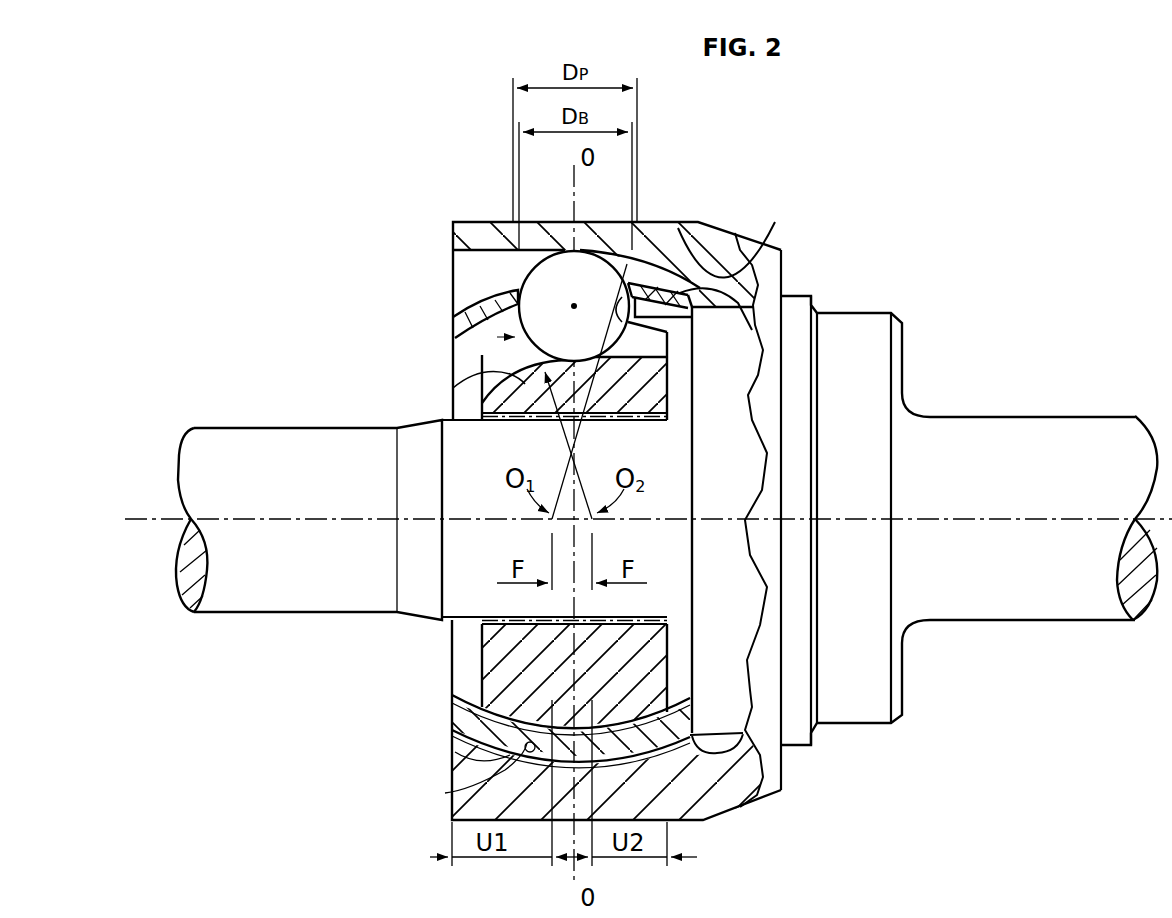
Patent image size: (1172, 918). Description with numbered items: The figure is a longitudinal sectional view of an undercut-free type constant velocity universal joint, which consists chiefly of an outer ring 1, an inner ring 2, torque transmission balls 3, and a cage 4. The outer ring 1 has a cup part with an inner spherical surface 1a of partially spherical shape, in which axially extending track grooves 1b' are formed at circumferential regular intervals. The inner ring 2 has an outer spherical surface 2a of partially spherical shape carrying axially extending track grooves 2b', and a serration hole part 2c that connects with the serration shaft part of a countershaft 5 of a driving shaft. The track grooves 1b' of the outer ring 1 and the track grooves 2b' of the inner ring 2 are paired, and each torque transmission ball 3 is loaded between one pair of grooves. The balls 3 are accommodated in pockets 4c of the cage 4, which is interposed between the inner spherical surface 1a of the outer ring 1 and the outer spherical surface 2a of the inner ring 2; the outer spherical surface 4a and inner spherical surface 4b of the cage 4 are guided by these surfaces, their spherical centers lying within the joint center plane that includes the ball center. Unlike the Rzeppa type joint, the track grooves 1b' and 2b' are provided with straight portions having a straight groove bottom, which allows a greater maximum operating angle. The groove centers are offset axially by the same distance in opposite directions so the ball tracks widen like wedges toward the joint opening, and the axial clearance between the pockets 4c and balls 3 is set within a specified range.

The outer ring 1 is at (448, 232).
The inner spherical surface 1a is at (470, 795).
The track grooves 1b' is at (465, 267).
The inner ring 2 is at (474, 355).
The outer spherical surface 2a is at (769, 246).
The track grooves 2b' is at (444, 388).
The serration hole part 2c is at (637, 612).
The torque transmission balls 3 is at (452, 318).
The cage 4 is at (667, 270).
The outer spherical surface 4a is at (468, 748).
The inner spherical surface 4b is at (482, 690).
The pockets 4c is at (694, 348).
The countershaft 5 is at (247, 597).